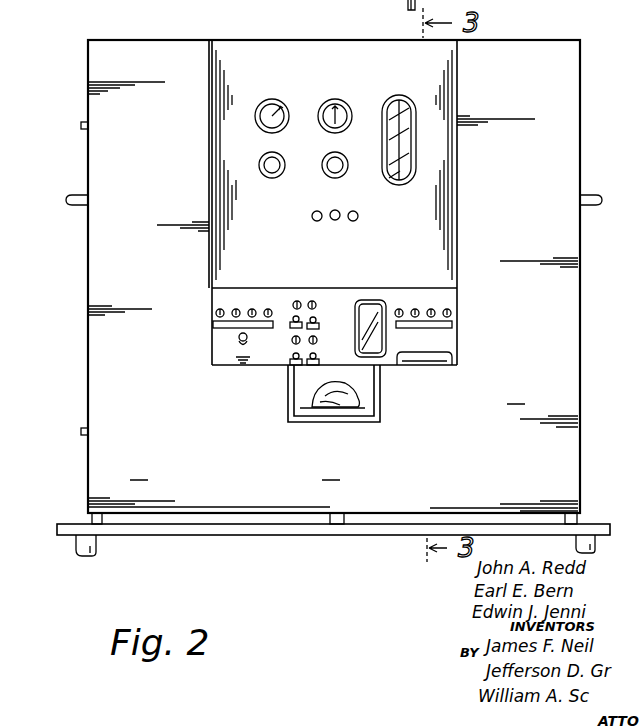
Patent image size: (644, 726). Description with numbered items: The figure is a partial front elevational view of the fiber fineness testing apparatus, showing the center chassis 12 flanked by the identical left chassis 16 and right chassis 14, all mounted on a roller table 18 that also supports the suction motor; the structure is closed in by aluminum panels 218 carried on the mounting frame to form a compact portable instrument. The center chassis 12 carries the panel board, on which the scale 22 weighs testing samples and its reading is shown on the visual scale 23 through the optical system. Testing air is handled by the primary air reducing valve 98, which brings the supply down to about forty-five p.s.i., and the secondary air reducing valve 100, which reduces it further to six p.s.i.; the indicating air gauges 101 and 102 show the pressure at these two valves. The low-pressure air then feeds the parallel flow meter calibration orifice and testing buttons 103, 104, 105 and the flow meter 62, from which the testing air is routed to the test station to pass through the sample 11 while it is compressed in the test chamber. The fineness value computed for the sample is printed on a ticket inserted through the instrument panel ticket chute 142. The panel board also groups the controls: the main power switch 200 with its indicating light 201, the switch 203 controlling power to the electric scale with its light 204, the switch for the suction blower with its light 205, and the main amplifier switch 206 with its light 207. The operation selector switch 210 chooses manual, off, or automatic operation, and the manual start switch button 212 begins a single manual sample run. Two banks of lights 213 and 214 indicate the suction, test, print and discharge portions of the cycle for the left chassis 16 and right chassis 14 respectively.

The sample 11 is at (312, 398).
The center chassis 12 is at (273, 68).
The right chassis 14 is at (580, 106).
The left chassis 16 is at (96, 146).
The roller table 18 is at (600, 524).
The scale 22 is at (365, 407).
The visual scale 23 is at (362, 300).
The flow meter 62 is at (386, 97).
The primary air reducing valve 98 is at (260, 160).
The secondary air reducing valve 100 is at (323, 160).
The indicating air gauge 101 is at (283, 100).
The indicating air gauge 102 is at (338, 99).
The flow meter calibration orifice and testing button 103 is at (311, 216).
The flow meter calibration orifice and testing button 104 is at (334, 221).
The flow meter calibration orifice and testing button 105 is at (356, 213).
The instrument panel ticket chute 142 is at (453, 358).
The main power switch 200 is at (317, 318).
The indicating light 201 is at (312, 300).
The scale power switch 203 is at (292, 317).
The indicating light 204 is at (297, 300).
The indicating light 205 is at (291, 340).
The amplifier main switch 206 is at (322, 354).
The indicating light 207 is at (318, 338).
The operation selector switch 210 is at (237, 338).
The manual start switch button 212 is at (236, 358).
The left chassis indicating lights 213 is at (266, 308).
The right chassis indicating lights 214 is at (446, 308).
The panels 218 is at (332, 434).